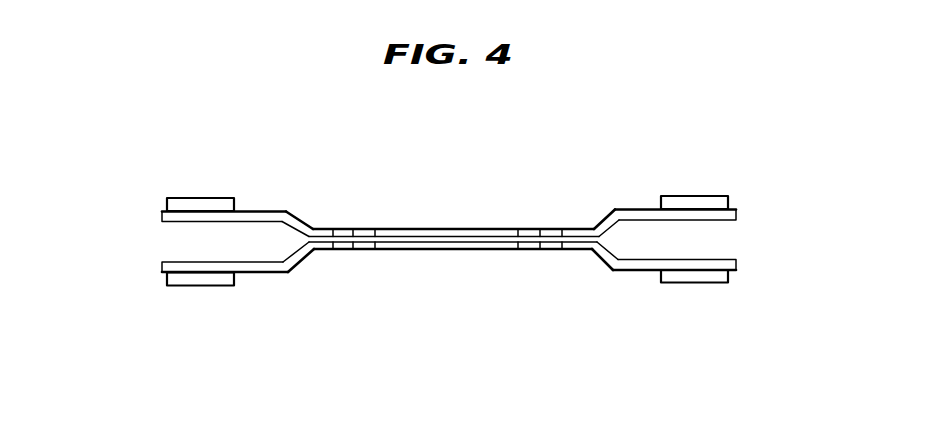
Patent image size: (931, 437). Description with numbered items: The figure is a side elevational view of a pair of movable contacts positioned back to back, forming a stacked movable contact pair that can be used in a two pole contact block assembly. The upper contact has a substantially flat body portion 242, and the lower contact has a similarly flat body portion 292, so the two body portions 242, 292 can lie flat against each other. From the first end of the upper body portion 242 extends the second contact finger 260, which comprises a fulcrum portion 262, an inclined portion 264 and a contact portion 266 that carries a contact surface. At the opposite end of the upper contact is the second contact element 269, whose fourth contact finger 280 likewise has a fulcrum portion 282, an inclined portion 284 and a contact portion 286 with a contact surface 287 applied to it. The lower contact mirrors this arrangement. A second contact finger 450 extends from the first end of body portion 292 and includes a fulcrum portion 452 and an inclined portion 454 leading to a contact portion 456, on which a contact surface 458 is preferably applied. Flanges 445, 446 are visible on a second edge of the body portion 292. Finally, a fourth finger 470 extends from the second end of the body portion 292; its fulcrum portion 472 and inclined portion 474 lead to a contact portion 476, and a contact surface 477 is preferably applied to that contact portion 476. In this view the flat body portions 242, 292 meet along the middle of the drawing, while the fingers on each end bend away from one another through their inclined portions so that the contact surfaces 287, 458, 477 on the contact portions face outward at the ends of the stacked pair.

The body portion 242 is at (445, 228).
The second contact finger 260 is at (738, 212).
The fulcrum portion 262 is at (569, 228).
The inclined portion 264 is at (597, 229).
The contact portion 266 is at (621, 208).
The second contact element 269 is at (698, 196).
The fourth contact finger 280 is at (161, 215).
The fulcrum portion 282 is at (318, 228).
The inclined portion 284 is at (293, 210).
The contact portion 286 is at (251, 210).
The contact surface 287 is at (193, 197).
The body portion 292 is at (467, 250).
The flange 445 is at (527, 250).
The flange 446 is at (357, 250).
The second contact finger 450 is at (738, 265).
The fulcrum portion 452 is at (572, 250).
The inclined portion 454 is at (598, 259).
The contact portion 456 is at (637, 271).
The contact surface 458 is at (703, 283).
The fourth finger 470 is at (161, 268).
The fulcrum portion 472 is at (311, 254).
The inclined portion 474 is at (293, 272).
The contact portion 476 is at (251, 273).
The contact surface 477 is at (195, 286).